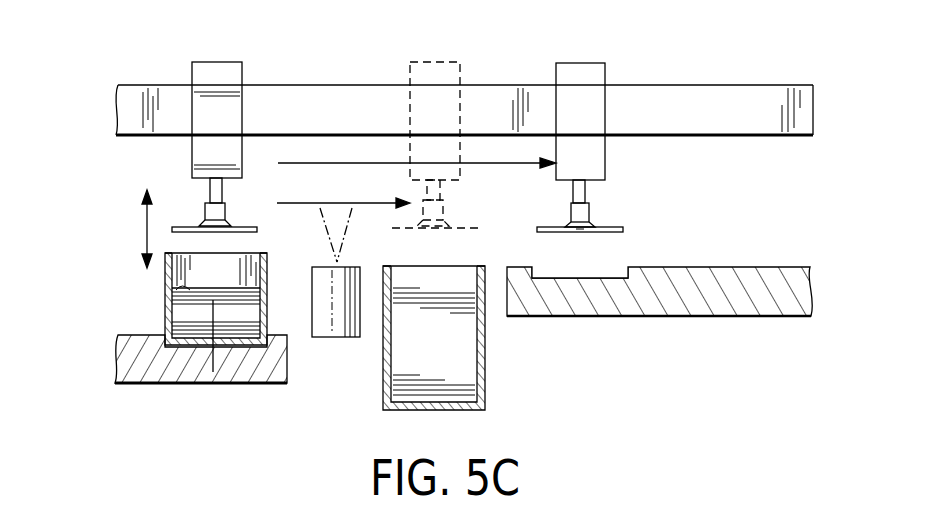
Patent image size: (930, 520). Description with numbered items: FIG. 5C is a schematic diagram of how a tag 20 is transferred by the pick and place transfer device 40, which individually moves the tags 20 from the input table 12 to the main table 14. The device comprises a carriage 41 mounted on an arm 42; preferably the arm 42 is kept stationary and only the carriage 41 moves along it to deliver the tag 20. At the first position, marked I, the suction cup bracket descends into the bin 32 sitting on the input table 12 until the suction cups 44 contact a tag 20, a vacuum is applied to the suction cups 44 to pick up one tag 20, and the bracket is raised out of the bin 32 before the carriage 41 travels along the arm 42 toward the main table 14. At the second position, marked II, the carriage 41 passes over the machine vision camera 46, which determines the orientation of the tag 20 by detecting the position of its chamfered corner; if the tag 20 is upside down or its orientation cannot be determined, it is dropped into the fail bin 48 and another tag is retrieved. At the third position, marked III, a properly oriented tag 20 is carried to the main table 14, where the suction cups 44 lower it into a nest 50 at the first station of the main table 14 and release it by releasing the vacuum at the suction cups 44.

The transfer device 40 is at (126, 62).
The carriage 41 is at (212, 146).
The arm 42 is at (286, 96).
The suction cups 44 is at (208, 209).
The tag 20 is at (258, 230).
The bin 32 is at (267, 306).
The input table 12 is at (237, 384).
The visual orientation camera 46 is at (342, 324).
The fail bin 48 is at (486, 384).
The main table 14 is at (740, 268).
The nest 50 is at (615, 268).